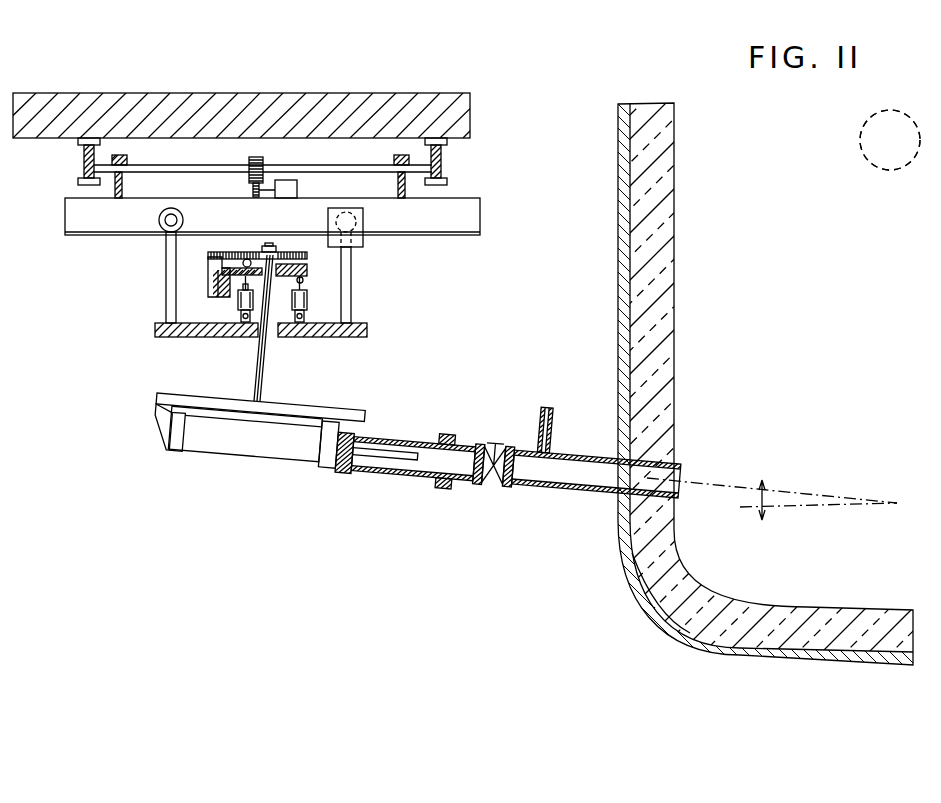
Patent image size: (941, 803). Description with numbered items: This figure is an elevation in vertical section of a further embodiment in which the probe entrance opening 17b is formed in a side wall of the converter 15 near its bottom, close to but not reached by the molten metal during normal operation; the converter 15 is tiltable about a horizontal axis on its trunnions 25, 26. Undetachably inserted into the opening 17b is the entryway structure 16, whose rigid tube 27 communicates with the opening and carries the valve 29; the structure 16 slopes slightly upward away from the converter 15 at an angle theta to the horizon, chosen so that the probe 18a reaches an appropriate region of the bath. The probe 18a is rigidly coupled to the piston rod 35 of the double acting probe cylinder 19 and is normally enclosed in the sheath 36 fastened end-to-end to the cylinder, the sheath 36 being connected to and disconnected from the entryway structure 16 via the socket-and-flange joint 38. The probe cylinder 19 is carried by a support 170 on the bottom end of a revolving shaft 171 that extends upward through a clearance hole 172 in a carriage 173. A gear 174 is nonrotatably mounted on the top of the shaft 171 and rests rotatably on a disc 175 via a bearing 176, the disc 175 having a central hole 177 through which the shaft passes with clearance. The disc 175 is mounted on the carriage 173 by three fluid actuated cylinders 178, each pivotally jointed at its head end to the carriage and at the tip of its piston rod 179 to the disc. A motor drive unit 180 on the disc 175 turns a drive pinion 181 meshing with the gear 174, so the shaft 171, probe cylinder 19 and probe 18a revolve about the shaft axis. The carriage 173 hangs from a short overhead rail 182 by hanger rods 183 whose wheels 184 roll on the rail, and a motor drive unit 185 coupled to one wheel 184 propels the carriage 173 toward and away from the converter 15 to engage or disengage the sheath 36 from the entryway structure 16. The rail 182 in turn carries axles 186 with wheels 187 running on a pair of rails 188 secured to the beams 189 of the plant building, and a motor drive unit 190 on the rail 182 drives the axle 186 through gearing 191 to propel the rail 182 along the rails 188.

The converter 15 is at (645, 629).
The entryway structure 16 is at (555, 501).
The probe entrance opening 17b is at (678, 474).
The probe 18a is at (411, 447).
The probe cylinder 19 is at (230, 445).
The trunnion 25 is at (878, 170).
The trunnion 26 is at (871, 200).
The rigid tube 27 is at (581, 456).
The valve 29 is at (510, 445).
The piston rod 35 is at (353, 462).
The sheath 36 is at (382, 467).
The socket-and-flange joint 38 is at (444, 482).
The support 170 is at (337, 412).
The revolving shaft 171 is at (257, 373).
The clearance hole 172 is at (273, 335).
The carriage 173 is at (158, 335).
The gear 174 is at (306, 257).
The disc 175 is at (303, 283).
The bearing 176 is at (306, 272).
The hole 177 is at (278, 255).
The fluid actuated cylinder 178 is at (243, 323).
The piston rod 179 is at (241, 314).
The motor drive unit 180 is at (216, 288).
The drive pinion 181 is at (230, 254).
The overhead rail 182 is at (78, 237).
The hanger rod 183 is at (164, 286).
The wheel 184 is at (160, 226).
The motor drive unit 185 is at (363, 240).
The axle 186 is at (327, 168).
The wheel 187 is at (127, 158).
The rail 188 is at (78, 166).
The beam 189 is at (386, 93).
The motor drive unit 190 is at (297, 189).
The gearing 191 is at (246, 176).